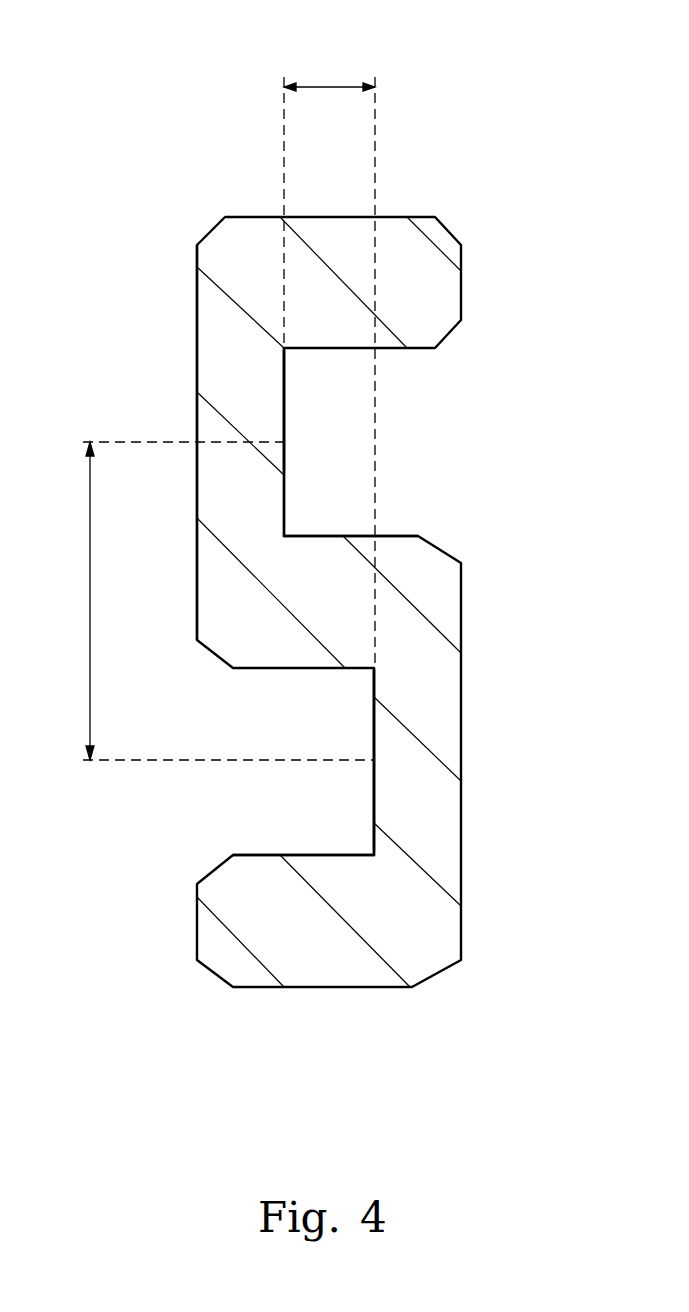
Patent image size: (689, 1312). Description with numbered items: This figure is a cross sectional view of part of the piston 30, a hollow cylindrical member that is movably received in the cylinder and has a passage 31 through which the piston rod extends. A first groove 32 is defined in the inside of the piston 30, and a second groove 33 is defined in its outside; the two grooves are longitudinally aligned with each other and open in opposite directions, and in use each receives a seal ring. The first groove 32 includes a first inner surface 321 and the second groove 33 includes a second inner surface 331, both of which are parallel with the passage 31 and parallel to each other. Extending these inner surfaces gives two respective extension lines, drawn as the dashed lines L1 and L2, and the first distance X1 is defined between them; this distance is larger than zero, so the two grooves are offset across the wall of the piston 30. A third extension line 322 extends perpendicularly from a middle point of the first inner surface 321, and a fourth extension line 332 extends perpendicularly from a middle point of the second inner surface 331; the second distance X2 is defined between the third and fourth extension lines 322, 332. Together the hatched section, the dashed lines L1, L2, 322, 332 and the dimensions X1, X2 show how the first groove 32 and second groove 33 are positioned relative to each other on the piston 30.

The piston 30 is at (450, 600).
The passage 31 is at (197, 312).
The first groove 32 is at (277, 778).
The second groove 33 is at (395, 437).
The second inner surface 331 is at (284, 408).
The fourth extension line 332 is at (173, 442).
The first inner surface 321 is at (374, 779).
The third extension line 322 is at (213, 762).
The extension line of the first inner surface L1 is at (284, 165).
The extension line of the second inner surface L2 is at (375, 163).
The first distance X1 is at (329, 69).
The second distance X2 is at (72, 601).